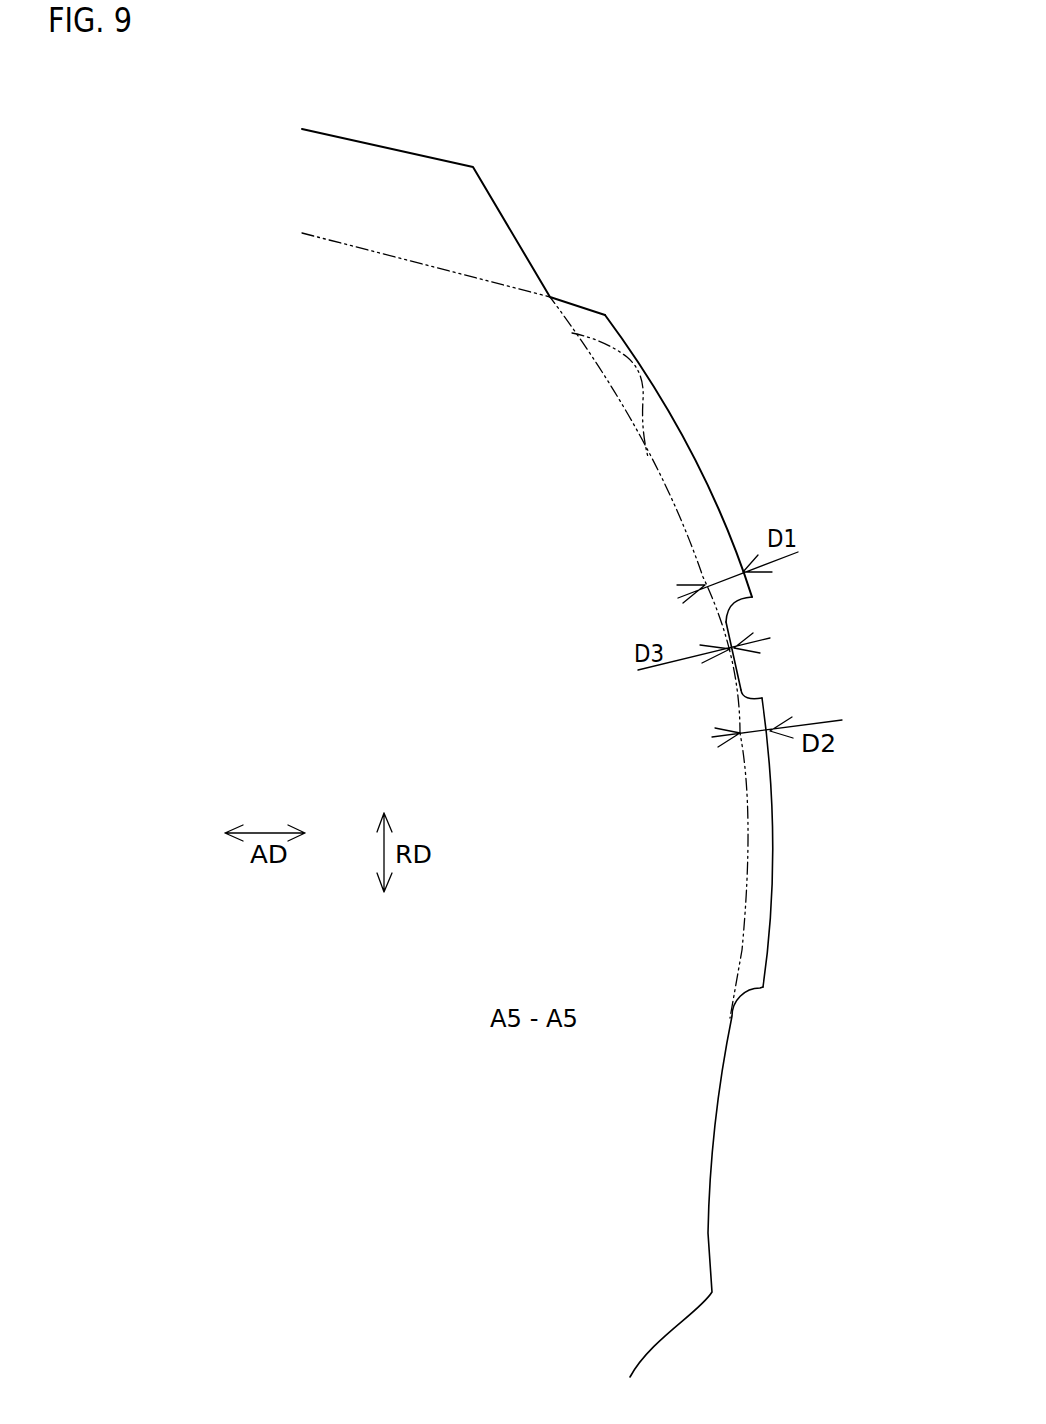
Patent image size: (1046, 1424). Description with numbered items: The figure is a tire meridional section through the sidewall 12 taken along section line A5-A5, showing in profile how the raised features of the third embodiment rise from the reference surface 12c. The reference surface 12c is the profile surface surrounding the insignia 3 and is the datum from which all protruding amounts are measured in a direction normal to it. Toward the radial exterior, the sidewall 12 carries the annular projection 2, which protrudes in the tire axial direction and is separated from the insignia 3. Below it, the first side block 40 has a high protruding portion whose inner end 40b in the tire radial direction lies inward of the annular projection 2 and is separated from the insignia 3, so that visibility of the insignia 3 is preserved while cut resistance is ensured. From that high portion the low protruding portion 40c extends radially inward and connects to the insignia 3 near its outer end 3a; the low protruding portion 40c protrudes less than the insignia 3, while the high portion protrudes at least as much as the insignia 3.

The annular projection 2 is at (636, 345).
The insignia 3 is at (762, 795).
The outer end of insignia 3a is at (742, 693).
The sidewall 12 is at (880, 1132).
The reference surface 12c is at (690, 547).
The first side block 40 is at (670, 432).
The inner end of high protruding portion 40b is at (753, 598).
The low protruding portion 40c is at (738, 663).